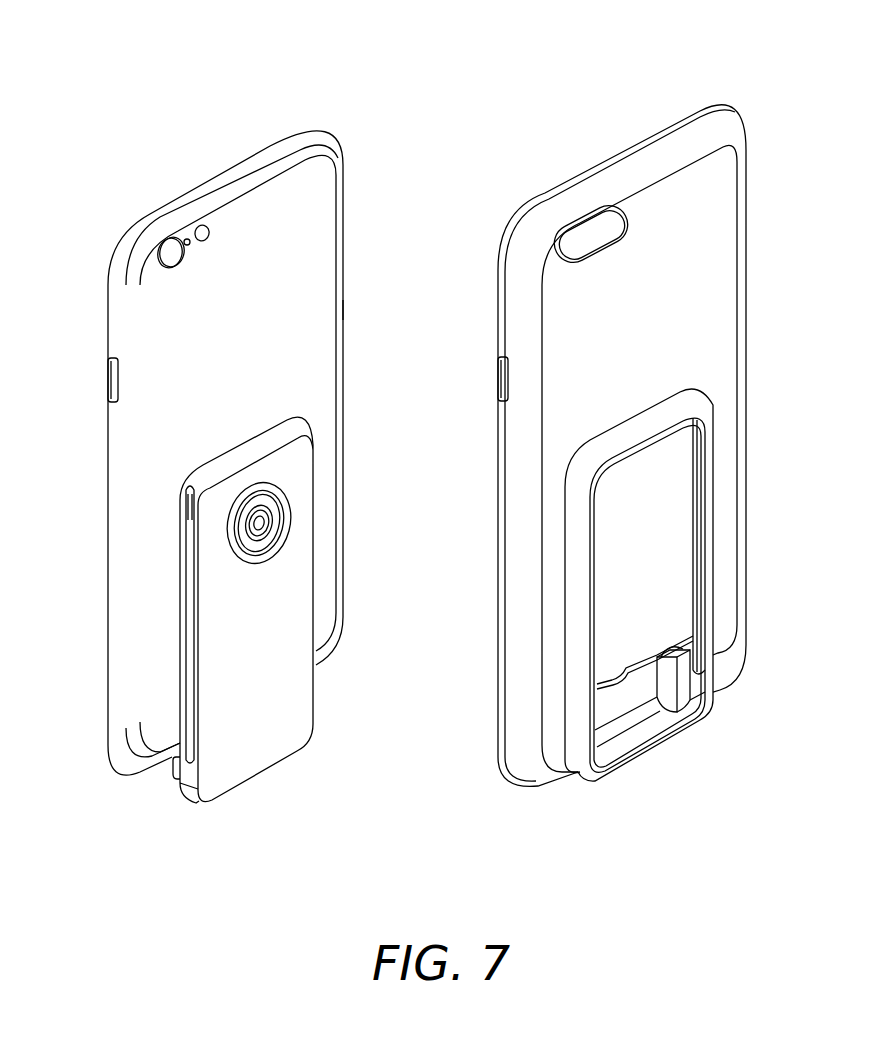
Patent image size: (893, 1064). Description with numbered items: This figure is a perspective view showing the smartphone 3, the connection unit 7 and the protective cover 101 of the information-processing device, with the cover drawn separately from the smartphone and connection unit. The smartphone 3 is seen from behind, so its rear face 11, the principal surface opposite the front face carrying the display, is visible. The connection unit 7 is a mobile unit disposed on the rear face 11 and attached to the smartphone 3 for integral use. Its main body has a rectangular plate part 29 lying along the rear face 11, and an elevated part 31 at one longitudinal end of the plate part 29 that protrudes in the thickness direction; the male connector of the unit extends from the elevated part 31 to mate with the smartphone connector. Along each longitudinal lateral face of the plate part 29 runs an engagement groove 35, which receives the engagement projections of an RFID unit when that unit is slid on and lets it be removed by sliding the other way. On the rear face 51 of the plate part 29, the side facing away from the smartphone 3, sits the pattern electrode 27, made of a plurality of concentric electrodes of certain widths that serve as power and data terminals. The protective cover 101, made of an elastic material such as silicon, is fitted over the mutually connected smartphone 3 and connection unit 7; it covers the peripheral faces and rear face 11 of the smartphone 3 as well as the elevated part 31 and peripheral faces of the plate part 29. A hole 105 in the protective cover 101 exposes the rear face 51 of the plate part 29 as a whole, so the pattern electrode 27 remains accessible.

The smartphone 3 is at (150, 133).
The connection unit 7 is at (229, 802).
The rear face 11 is at (290, 298).
The pattern electrode 27 is at (253, 566).
The plate part 29 is at (319, 579).
The elevated part 31 is at (173, 776).
The engagement groove 35 is at (194, 633).
The rear face 51 is at (295, 690).
The protective cover 101 is at (601, 136).
The hole 105 is at (710, 475).